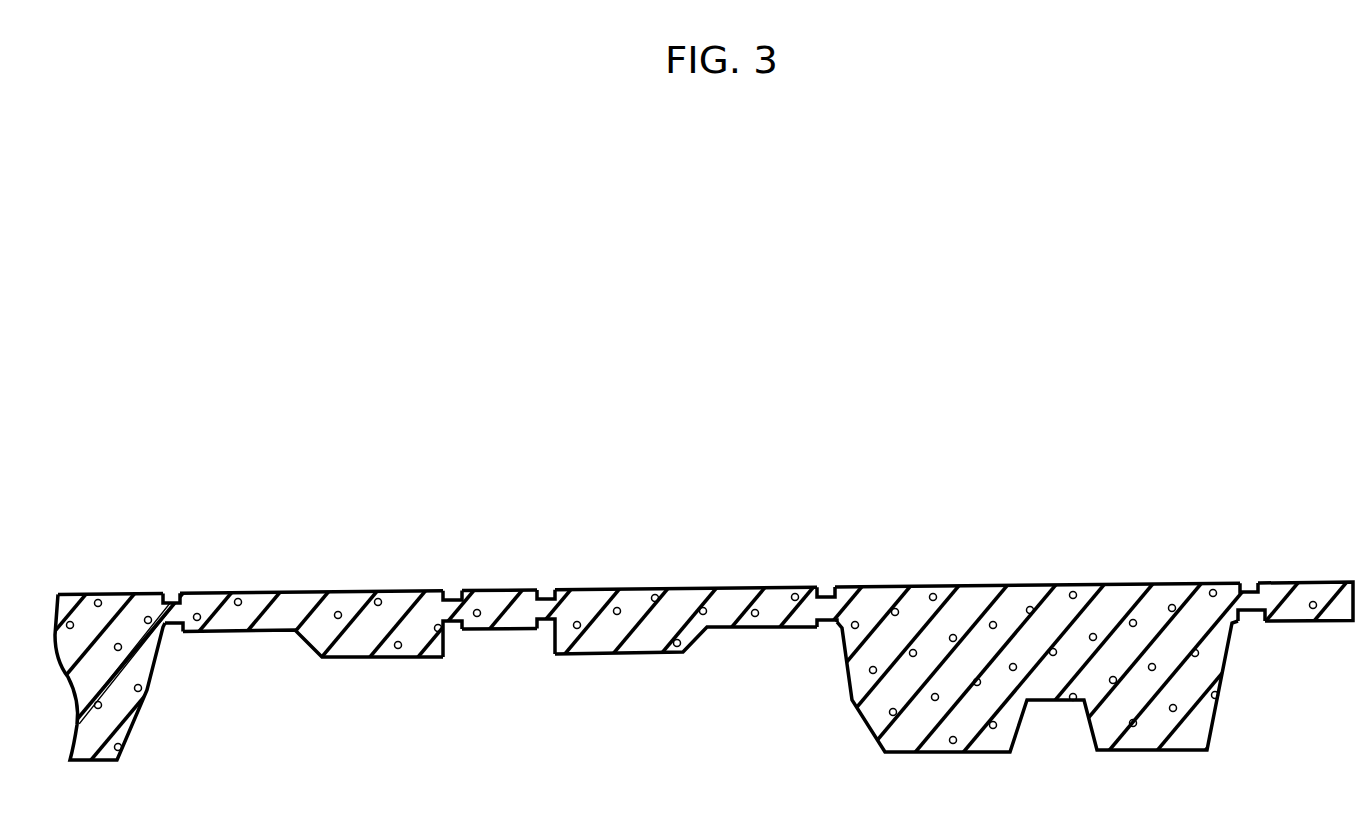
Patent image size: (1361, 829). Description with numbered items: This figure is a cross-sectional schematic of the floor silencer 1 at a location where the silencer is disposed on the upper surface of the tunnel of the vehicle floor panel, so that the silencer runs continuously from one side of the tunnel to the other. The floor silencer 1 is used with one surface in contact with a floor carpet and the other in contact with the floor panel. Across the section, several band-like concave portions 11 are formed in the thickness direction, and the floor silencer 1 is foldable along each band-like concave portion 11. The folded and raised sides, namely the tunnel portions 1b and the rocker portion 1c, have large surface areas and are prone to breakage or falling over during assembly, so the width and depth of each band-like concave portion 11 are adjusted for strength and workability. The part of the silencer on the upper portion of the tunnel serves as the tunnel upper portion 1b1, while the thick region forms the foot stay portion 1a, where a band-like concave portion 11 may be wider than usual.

The floor silencer 1 is at (678, 602).
The foot stay portion 1a is at (1174, 605).
The tunnel portion 1b is at (323, 592).
The tunnel upper portion 1b1 is at (494, 603).
The rocker portion 1c is at (1311, 603).
The band-like concave portion 11 is at (173, 628).